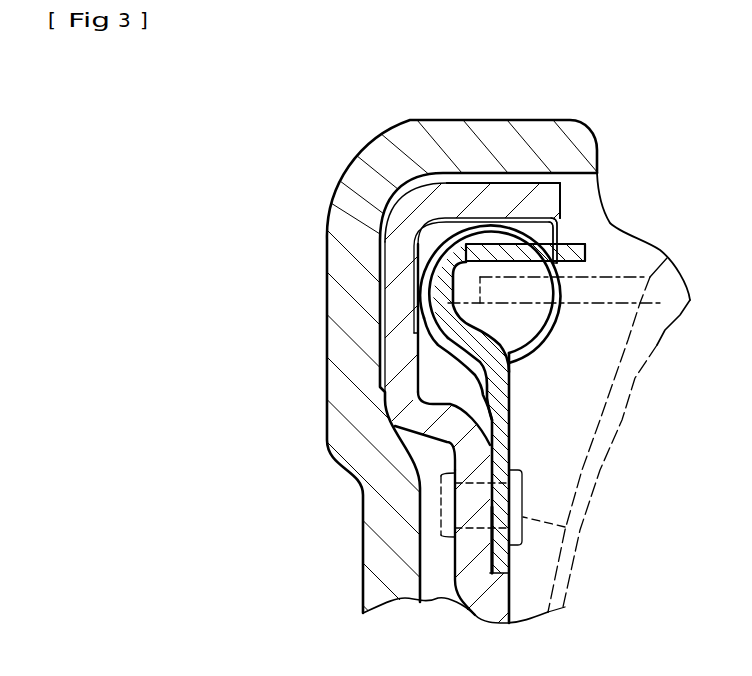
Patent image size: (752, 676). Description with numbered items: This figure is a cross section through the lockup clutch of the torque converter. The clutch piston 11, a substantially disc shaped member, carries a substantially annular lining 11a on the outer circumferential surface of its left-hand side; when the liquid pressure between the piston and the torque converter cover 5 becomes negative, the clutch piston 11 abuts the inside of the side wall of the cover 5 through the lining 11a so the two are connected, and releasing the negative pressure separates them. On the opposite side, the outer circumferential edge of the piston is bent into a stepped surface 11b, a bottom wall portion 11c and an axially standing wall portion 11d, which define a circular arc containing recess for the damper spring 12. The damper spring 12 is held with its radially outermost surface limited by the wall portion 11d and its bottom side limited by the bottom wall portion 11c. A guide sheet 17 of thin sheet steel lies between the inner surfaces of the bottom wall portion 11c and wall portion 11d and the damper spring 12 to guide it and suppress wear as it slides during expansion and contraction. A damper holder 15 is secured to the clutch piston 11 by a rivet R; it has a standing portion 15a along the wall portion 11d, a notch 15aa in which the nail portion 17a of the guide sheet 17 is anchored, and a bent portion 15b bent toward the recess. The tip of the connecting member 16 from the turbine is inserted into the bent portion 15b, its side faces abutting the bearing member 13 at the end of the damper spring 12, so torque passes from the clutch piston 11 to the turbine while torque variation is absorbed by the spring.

The torque converter cover 5 is at (377, 553).
The clutch piston 11 is at (396, 214).
The lining 11a is at (382, 322).
The stepped surface 11b is at (432, 390).
The bottom wall portion 11c is at (430, 355).
The wall portion 11d is at (475, 190).
The damper spring 12 is at (540, 352).
The bearing member 13 is at (549, 331).
The damper holder 15 is at (510, 437).
The standing portion 15a is at (587, 251).
The notch 15aa is at (566, 246).
The bent portion 15b is at (448, 303).
The connecting member 16 is at (593, 291).
The guide sheet 17 is at (416, 241).
The nail portion 17a is at (565, 247).
The rivet R is at (565, 527).